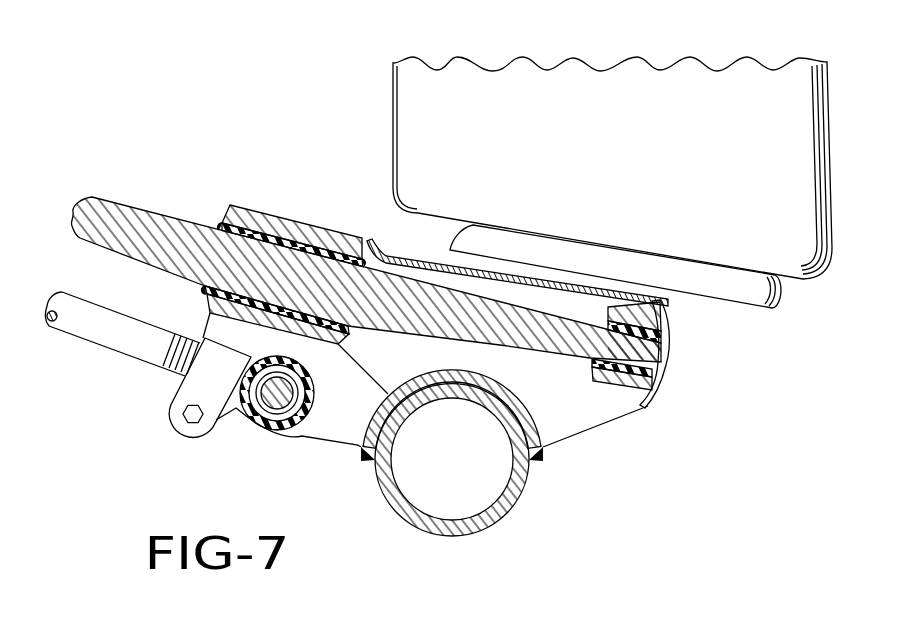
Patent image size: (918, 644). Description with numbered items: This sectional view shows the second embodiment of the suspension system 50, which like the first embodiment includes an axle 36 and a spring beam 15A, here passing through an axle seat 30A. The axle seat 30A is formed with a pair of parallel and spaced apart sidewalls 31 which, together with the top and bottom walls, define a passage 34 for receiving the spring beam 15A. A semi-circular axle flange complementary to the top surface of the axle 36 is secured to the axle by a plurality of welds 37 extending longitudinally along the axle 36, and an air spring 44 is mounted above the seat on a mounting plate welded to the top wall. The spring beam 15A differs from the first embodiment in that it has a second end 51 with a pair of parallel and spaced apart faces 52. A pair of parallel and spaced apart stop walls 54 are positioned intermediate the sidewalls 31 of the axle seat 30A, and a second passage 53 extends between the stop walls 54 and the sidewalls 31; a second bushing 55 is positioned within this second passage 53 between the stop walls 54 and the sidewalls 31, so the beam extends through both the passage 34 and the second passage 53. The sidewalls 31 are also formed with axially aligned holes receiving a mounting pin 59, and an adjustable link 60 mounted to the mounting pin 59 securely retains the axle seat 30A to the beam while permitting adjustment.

The spring beam 15A is at (171, 216).
The passage 34 is at (282, 240).
The air spring 44 is at (410, 106).
The stop walls 54 is at (630, 316).
The faces 52 is at (655, 326).
The second end 51 is at (648, 346).
The second passage 53 is at (640, 362).
The second bushing 55 is at (605, 380).
The axle seat 30A is at (569, 450).
The welds 37 is at (537, 460).
The axle 36 is at (480, 533).
The suspension system 50 is at (606, 535).
The sidewalls 31 is at (342, 431).
The mounting pin 59 is at (280, 399).
The adjustable link 60 is at (112, 340).